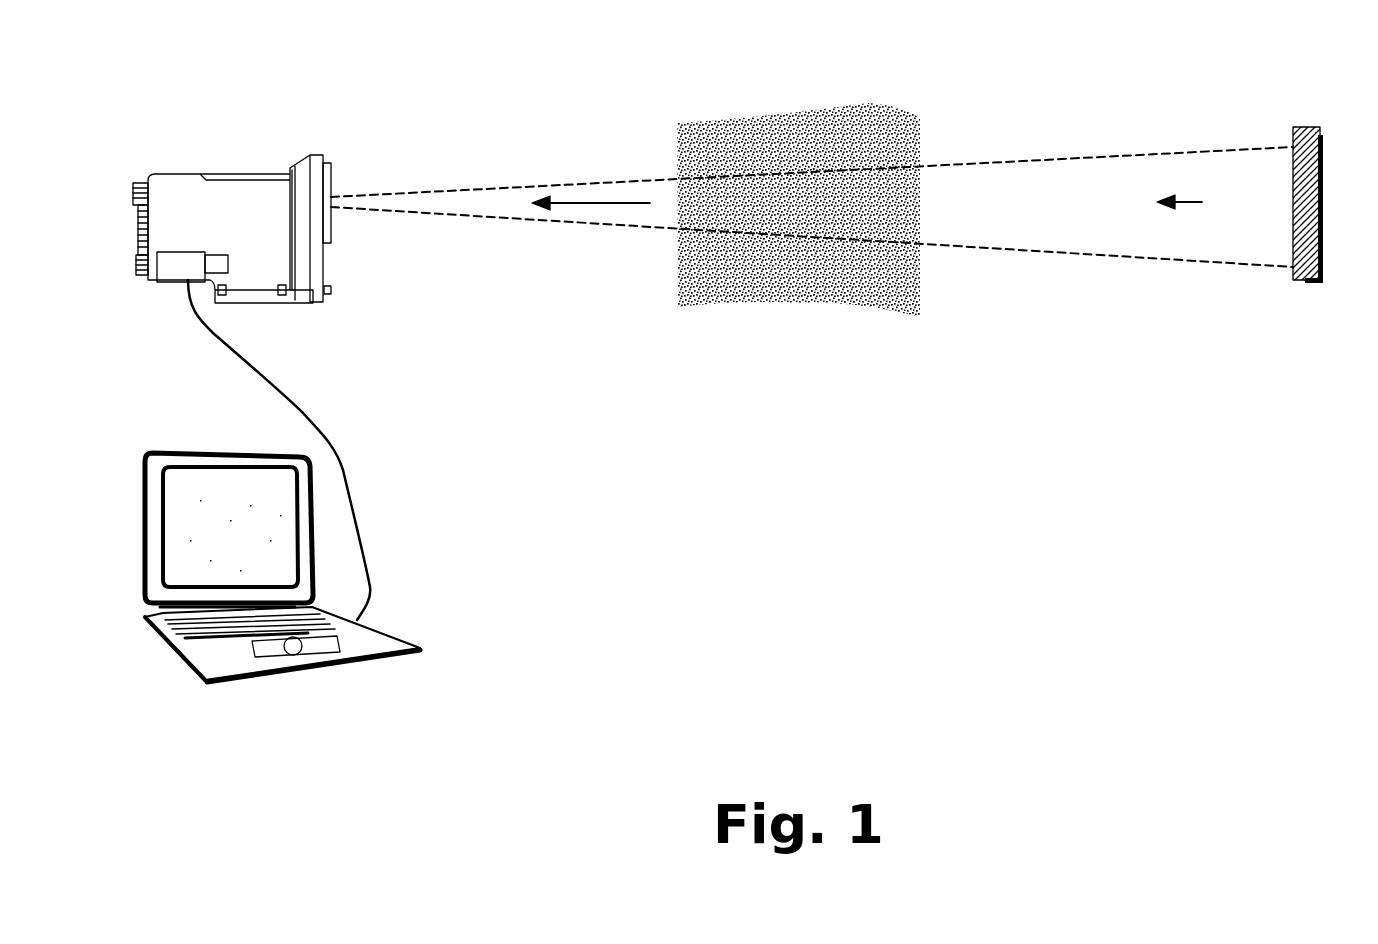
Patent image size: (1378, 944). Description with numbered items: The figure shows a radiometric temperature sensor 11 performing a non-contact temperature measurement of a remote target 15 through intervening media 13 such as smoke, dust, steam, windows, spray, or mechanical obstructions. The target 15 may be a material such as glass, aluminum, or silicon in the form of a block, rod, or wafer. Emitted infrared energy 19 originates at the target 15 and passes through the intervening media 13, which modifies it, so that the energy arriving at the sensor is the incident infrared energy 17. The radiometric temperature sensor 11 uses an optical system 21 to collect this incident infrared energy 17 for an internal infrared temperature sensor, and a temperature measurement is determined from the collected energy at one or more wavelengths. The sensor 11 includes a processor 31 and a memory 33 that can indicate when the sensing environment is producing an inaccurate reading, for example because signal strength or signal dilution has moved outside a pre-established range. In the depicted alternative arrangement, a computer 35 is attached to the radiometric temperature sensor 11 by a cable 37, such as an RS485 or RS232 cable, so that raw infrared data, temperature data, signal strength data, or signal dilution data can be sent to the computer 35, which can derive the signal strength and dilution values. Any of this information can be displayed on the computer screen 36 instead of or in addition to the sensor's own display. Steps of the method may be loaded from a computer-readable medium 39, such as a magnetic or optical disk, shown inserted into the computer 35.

The radiometric temperature sensor 11 is at (178, 175).
The intervening media 13 is at (867, 103).
The target 15 is at (1312, 127).
The incident infrared energy 17 is at (605, 202).
The emitted infrared energy 19 is at (1187, 200).
The optical system 21 is at (312, 153).
The processor 31 is at (173, 278).
The memory 33 is at (217, 252).
The computer 35 is at (188, 452).
The computer screen 36 is at (182, 523).
The cable 37 is at (342, 455).
The computer-readable medium 39 is at (180, 655).